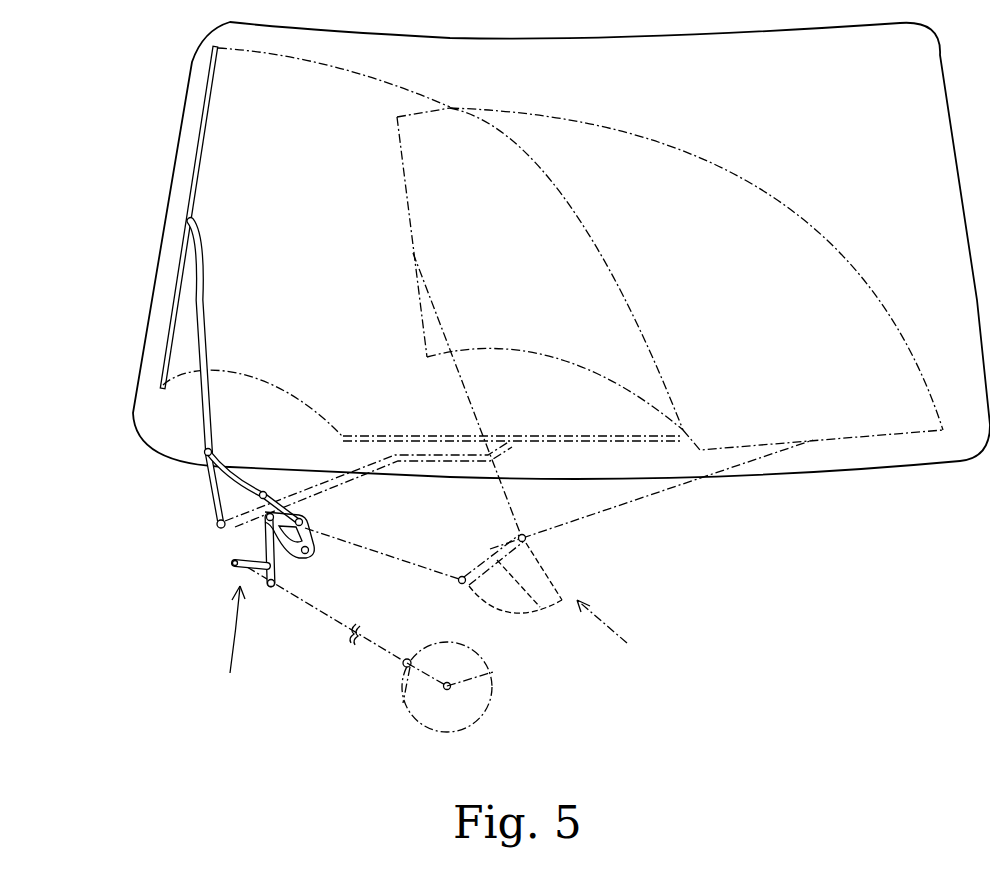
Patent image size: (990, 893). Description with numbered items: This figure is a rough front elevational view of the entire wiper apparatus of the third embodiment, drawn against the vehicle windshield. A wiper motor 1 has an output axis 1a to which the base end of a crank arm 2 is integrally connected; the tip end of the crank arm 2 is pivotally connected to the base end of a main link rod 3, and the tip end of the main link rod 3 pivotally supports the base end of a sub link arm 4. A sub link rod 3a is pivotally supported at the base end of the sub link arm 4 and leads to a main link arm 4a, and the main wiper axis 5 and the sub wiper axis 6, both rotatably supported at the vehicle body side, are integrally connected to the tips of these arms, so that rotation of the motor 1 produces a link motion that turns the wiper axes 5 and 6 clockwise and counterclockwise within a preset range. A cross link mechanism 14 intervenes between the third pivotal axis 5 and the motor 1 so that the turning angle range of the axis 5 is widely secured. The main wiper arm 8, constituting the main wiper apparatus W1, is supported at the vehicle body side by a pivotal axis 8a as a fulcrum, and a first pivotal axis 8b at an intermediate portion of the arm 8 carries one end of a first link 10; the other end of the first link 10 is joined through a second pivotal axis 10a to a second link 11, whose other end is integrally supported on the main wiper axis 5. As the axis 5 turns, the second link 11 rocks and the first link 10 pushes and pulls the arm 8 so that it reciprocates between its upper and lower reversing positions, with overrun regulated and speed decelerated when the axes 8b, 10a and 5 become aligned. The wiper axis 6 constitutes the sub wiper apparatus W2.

The wiper motor 1 is at (473, 703).
The output axis 1a is at (493, 672).
The crank arm 2 is at (403, 703).
The main link rod 3 is at (322, 613).
The sub link rod 3a is at (427, 570).
The sub link arm 4 is at (313, 543).
The main link arm 4a is at (540, 607).
The main wiper axis 5 is at (309, 521).
The sub wiper axis 6 is at (528, 541).
The main wiper arm 8 is at (214, 497).
The pivotal axis 8a is at (216, 527).
The first pivotal axis 8b is at (205, 451).
The first link 10 is at (238, 478).
The second pivotal axis 10a is at (266, 492).
The second link 11 is at (290, 493).
The cross link mechanism 14 is at (245, 548).
The main wiper apparatus W1 is at (232, 651).
The sub wiper apparatus W2 is at (625, 632).